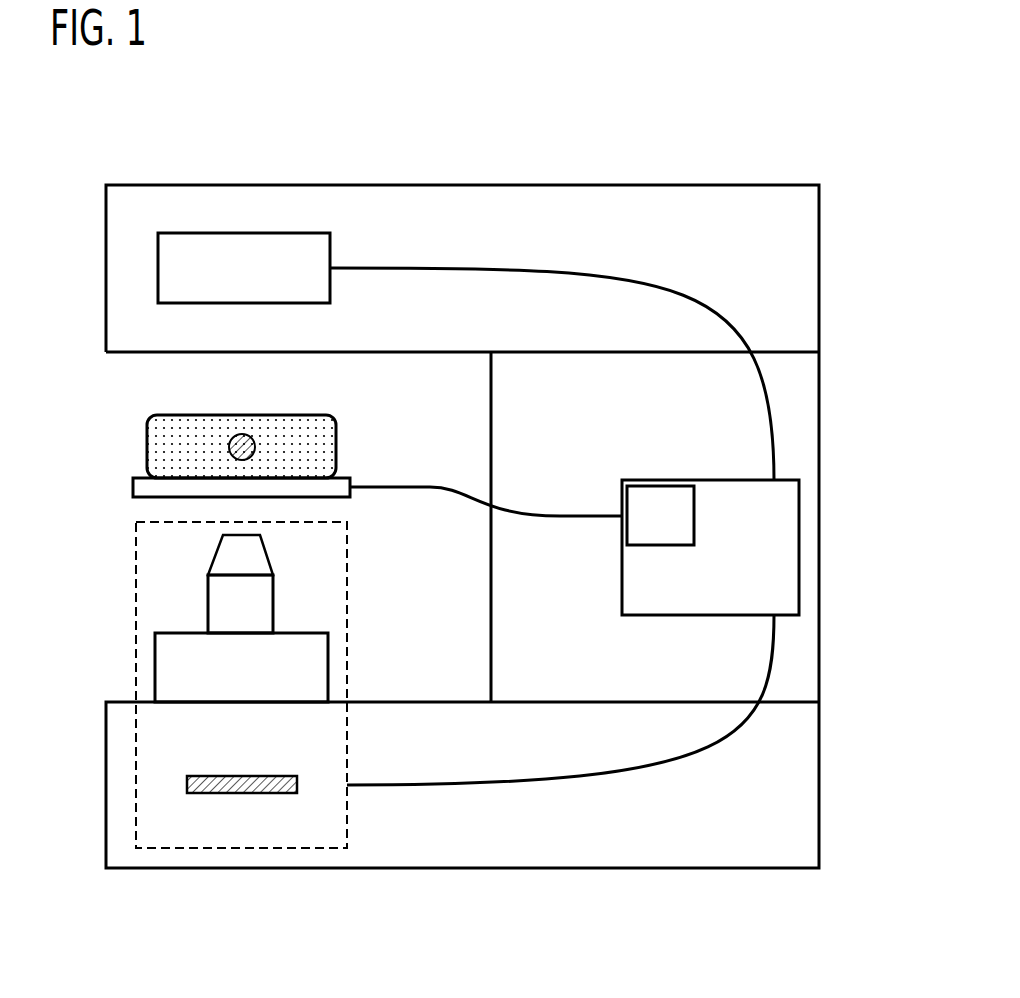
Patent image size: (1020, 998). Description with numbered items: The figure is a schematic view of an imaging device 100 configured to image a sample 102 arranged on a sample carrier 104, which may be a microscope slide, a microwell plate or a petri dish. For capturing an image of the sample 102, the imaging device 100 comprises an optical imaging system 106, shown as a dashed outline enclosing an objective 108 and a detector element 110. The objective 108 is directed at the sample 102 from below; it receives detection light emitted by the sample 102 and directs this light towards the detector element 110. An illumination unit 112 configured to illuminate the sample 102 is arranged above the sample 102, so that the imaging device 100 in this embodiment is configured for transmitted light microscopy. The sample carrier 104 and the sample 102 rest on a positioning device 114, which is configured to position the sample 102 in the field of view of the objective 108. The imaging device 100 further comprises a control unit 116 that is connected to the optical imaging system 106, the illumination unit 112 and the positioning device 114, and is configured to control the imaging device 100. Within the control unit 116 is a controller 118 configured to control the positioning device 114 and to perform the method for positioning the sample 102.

The imaging device 100 is at (646, 104).
The sample 102 is at (240, 440).
The sample carrier 104 is at (147, 440).
The optical imaging system 106 is at (136, 663).
The objective 108 is at (217, 552).
The detector element 110 is at (241, 794).
The illumination unit 112 is at (242, 252).
The positioning device 114 is at (133, 487).
The control unit 116 is at (660, 600).
The controller 118 is at (660, 497).